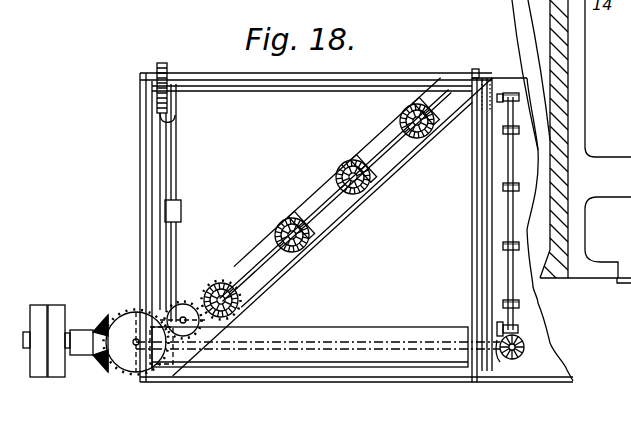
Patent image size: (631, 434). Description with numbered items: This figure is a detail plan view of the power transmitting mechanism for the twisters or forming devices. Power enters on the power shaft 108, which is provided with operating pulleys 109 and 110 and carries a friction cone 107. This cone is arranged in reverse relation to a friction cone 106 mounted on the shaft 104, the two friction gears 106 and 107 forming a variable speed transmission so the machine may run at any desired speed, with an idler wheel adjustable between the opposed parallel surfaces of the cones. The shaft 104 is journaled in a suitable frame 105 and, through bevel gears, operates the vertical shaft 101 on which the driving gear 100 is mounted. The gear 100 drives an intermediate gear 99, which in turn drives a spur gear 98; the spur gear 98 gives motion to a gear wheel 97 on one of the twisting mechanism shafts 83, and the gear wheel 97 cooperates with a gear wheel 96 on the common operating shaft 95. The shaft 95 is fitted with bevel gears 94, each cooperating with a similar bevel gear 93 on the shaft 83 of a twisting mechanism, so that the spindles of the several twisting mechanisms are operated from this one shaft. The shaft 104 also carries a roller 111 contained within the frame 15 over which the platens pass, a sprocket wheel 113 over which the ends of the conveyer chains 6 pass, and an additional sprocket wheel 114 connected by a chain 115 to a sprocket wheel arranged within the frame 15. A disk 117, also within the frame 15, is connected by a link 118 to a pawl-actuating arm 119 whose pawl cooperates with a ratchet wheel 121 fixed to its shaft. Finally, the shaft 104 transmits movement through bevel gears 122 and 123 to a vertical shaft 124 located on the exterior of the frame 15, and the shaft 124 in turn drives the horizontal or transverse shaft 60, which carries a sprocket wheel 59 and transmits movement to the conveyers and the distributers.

The conveyer chains 6 is at (170, 61).
The frame 15 is at (140, 128).
The sprocket wheel 59 is at (502, 130).
The transverse shaft 60 is at (511, 285).
The twisting mechanism shaft 83 is at (232, 320).
The bevel gear 93 is at (294, 252).
The bevel gears 94 is at (312, 237).
The common operating shaft 95 is at (320, 208).
The gear wheel 96 is at (234, 266).
The gear wheel 97 is at (225, 342).
The spur gear 98 is at (208, 290).
The intermediate gear 99 is at (196, 335).
The driving gear 100 is at (136, 342).
The vertical shaft 101 is at (132, 350).
The shaft 104 is at (388, 345).
The frame 105 is at (77, 356).
The friction cone 106 is at (100, 325).
The friction cone 107 is at (98, 314).
The power shaft 108 is at (22, 338).
The operating pulley 109 is at (38, 378).
The operating pulley 110 is at (55, 305).
The roller 111 is at (348, 338).
The sprocket wheel 113 is at (470, 327).
The sprocket wheel 114 is at (154, 368).
The chain 115 is at (170, 253).
The disk 117 is at (181, 219).
The link 118 is at (176, 161).
The pawl-actuating arm 119 is at (172, 103).
The ratchet wheel 121 is at (170, 122).
The bevel gear 122 is at (512, 359).
The bevel gear 123 is at (524, 348).
The vertical shaft 124 is at (520, 332).